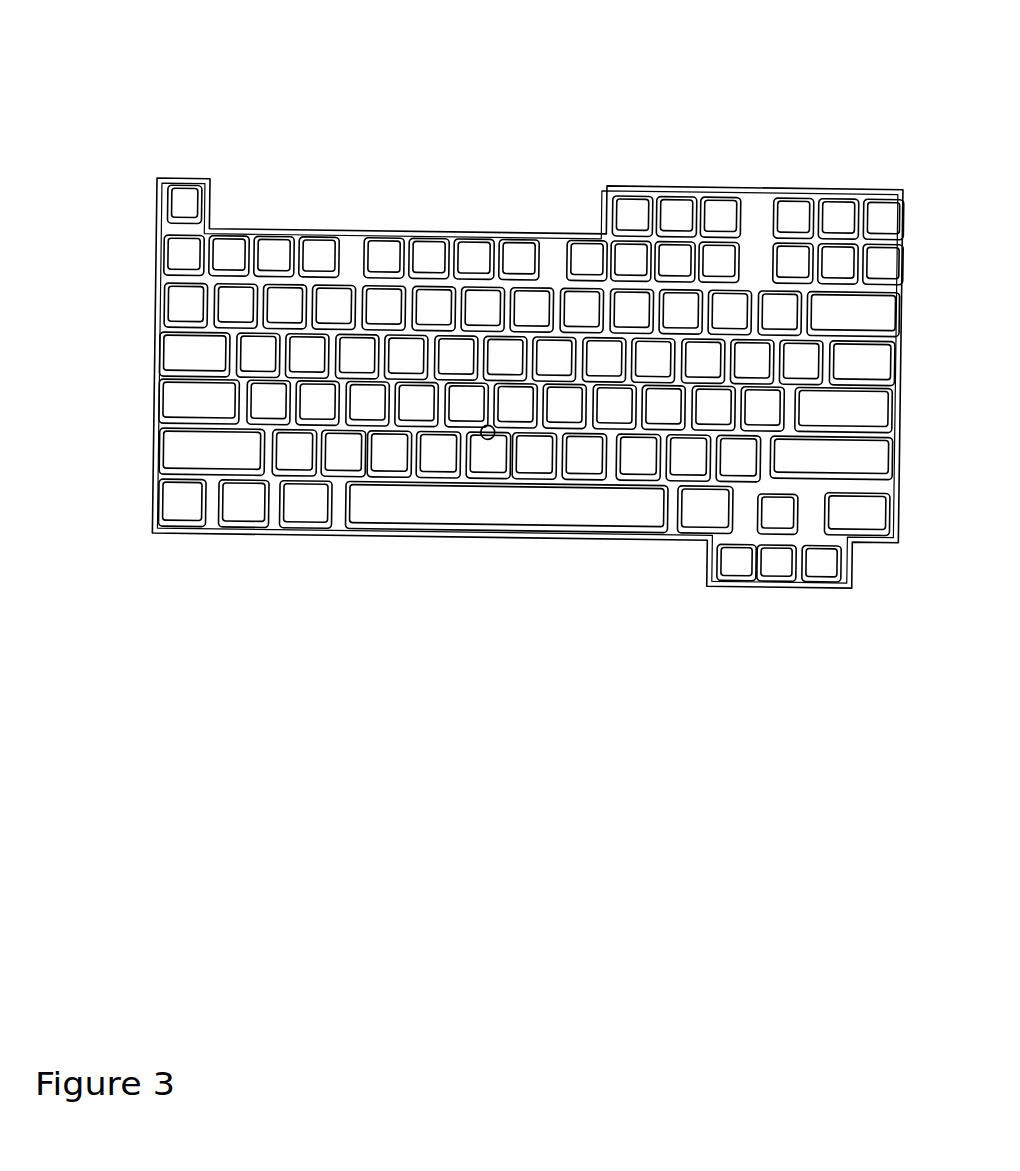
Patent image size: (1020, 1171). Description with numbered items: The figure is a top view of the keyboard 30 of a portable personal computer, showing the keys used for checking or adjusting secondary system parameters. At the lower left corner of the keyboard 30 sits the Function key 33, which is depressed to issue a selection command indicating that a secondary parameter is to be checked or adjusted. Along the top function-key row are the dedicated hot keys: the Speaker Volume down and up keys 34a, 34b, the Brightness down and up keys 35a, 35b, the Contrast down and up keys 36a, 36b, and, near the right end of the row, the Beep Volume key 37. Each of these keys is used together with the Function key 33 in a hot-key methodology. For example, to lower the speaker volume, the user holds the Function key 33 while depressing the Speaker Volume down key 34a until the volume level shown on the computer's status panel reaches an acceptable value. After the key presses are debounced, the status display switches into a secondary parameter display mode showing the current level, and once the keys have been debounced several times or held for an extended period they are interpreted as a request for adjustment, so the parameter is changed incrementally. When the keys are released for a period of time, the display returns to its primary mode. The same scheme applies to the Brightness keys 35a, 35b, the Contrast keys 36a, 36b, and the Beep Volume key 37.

The keyboard 30 is at (123, 347).
The Function key 33 is at (190, 493).
The Speaker Volume down key 34a is at (374, 240).
The Speaker Volume up key 34b is at (420, 240).
The Brightness down key 35a is at (476, 242).
The Brightness up key 35b is at (514, 242).
The Contrast down key 36a is at (633, 252).
The Contrast up key 36b is at (677, 252).
The Beep Volume key 37 is at (726, 262).